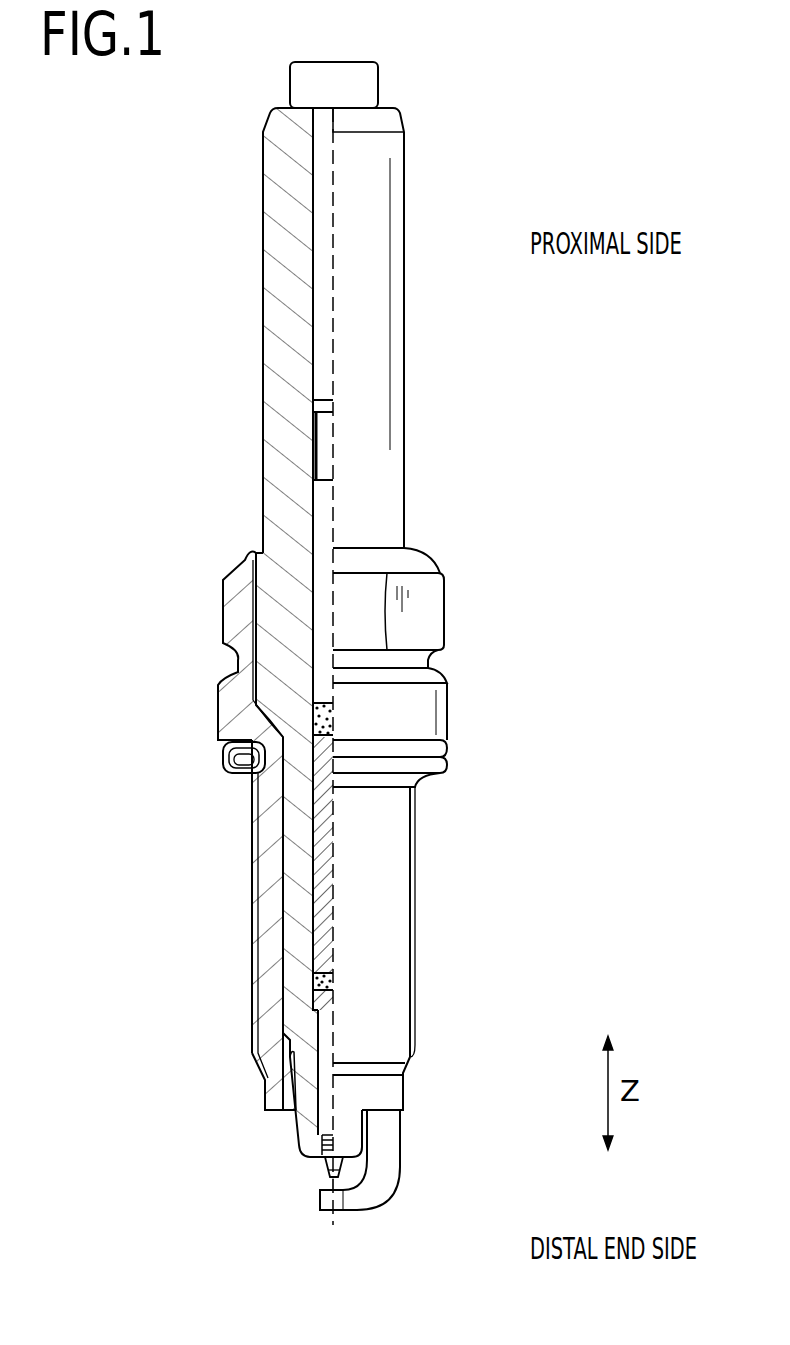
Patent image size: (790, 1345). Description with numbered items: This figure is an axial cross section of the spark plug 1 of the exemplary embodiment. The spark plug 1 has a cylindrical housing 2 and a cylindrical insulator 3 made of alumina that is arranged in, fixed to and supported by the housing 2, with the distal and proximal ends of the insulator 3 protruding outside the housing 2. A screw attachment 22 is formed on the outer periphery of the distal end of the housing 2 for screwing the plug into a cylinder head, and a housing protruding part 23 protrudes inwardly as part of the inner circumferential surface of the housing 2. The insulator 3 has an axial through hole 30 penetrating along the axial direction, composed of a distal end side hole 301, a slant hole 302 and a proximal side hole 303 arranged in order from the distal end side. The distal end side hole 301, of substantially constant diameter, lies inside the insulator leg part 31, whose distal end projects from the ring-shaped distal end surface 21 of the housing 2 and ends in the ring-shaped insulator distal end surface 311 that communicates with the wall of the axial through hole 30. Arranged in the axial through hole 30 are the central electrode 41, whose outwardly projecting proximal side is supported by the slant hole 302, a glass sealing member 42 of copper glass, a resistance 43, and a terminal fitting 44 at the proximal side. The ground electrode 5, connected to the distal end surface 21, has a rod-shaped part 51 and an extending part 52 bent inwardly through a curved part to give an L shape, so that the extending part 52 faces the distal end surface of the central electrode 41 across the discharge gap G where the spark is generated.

The spark plug 1 is at (450, 94).
The housing 2 is at (218, 700).
The distal end surface 21 is at (277, 1112).
The screw attachment 22 is at (282, 888).
The housing protruding part 23 is at (340, 1038).
The insulator 3 is at (263, 415).
The axial through hole 30 is at (318, 242).
The distal end side hole 301 is at (320, 1092).
The slant hole 302 is at (315, 1000).
The proximal side hole 303 is at (320, 927).
The insulator leg part 31 is at (300, 1086).
The insulator distal end surface 311 is at (317, 1166).
The central electrode 41 is at (327, 1168).
The glass sealing member 42 is at (313, 718).
The resistance 43 is at (327, 833).
The terminal fitting 44 is at (323, 530).
The ground electrode 5 is at (382, 1188).
The rod-shaped part 51 is at (390, 1143).
The extending part 52 is at (347, 1203).
The discharge gap G is at (326, 1183).